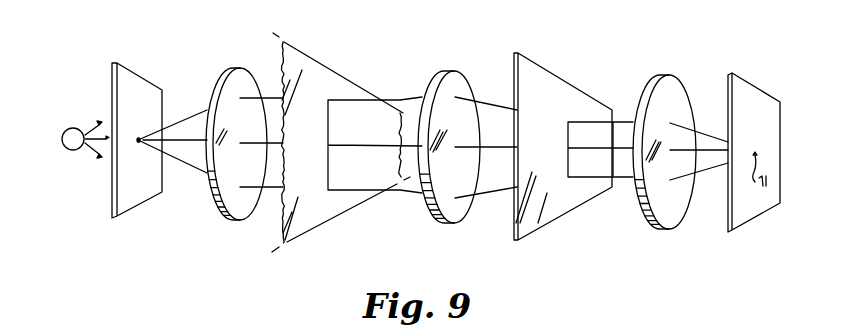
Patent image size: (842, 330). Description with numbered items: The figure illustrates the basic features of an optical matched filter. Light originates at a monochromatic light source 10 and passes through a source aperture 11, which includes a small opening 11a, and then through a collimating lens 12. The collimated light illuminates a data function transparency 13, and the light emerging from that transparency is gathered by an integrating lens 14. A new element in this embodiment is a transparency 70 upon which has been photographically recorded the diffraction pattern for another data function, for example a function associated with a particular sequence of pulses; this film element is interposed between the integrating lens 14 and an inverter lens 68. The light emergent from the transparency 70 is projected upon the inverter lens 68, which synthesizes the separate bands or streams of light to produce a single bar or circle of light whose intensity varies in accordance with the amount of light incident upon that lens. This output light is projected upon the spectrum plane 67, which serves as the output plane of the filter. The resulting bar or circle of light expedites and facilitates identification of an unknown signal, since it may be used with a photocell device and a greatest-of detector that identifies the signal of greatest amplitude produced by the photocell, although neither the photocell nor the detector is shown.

The monochromatic light source 10 is at (73, 128).
The source aperture 11 is at (143, 72).
The pinhole 11a is at (137, 130).
The collimating lens 12 is at (238, 68).
The data function transparency 13 is at (328, 67).
The integrating lens 14 is at (458, 72).
The transparency 70 is at (563, 80).
The inverter lens 68 is at (670, 75).
The spectrum plane 67 is at (757, 85).